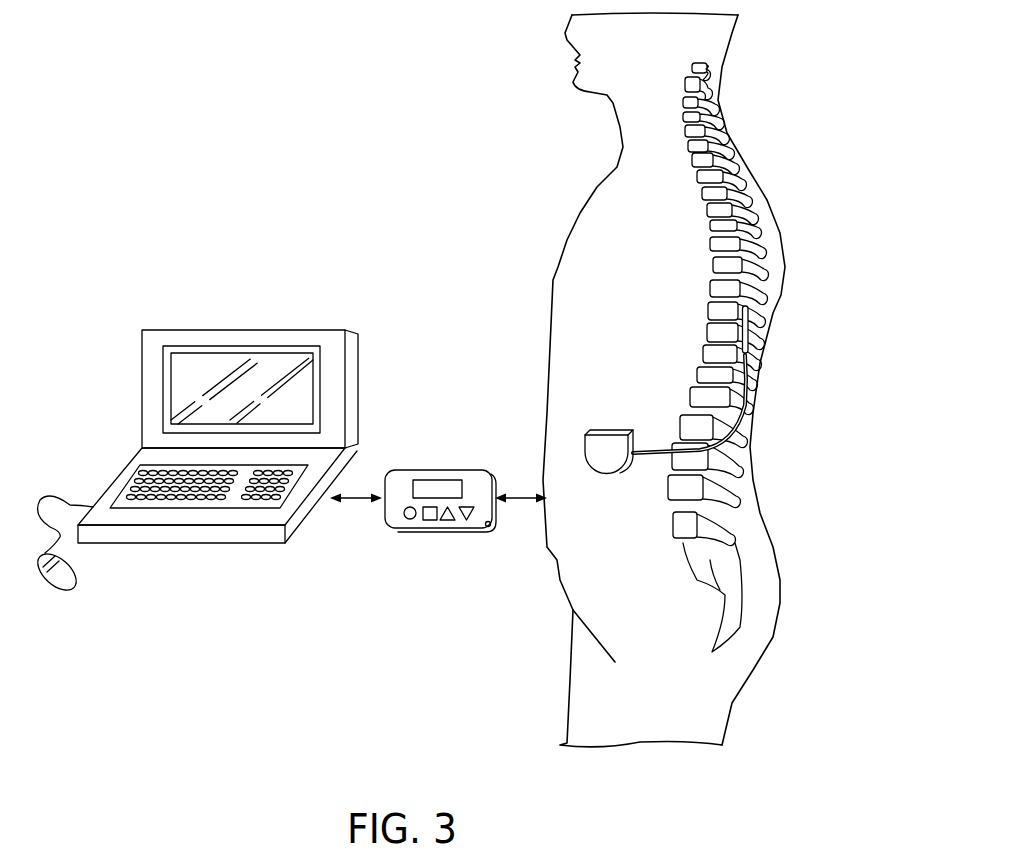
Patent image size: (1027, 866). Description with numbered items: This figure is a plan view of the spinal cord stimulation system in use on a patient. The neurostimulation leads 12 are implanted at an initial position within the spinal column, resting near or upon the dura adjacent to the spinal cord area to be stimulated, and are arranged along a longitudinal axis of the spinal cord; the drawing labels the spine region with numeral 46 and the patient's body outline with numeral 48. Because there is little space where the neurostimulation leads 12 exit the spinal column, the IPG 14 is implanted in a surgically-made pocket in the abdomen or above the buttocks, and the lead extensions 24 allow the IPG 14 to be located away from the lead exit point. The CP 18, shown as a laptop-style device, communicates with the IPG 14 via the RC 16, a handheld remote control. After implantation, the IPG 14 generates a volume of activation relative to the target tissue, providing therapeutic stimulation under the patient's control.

The neurostimulation leads 12 is at (753, 335).
The IPG 14 is at (608, 460).
The RC 16 is at (462, 455).
The CP 18 is at (232, 318).
The lead extensions 24 is at (750, 408).
The spine 46 is at (710, 310).
The patient 48 is at (560, 253).